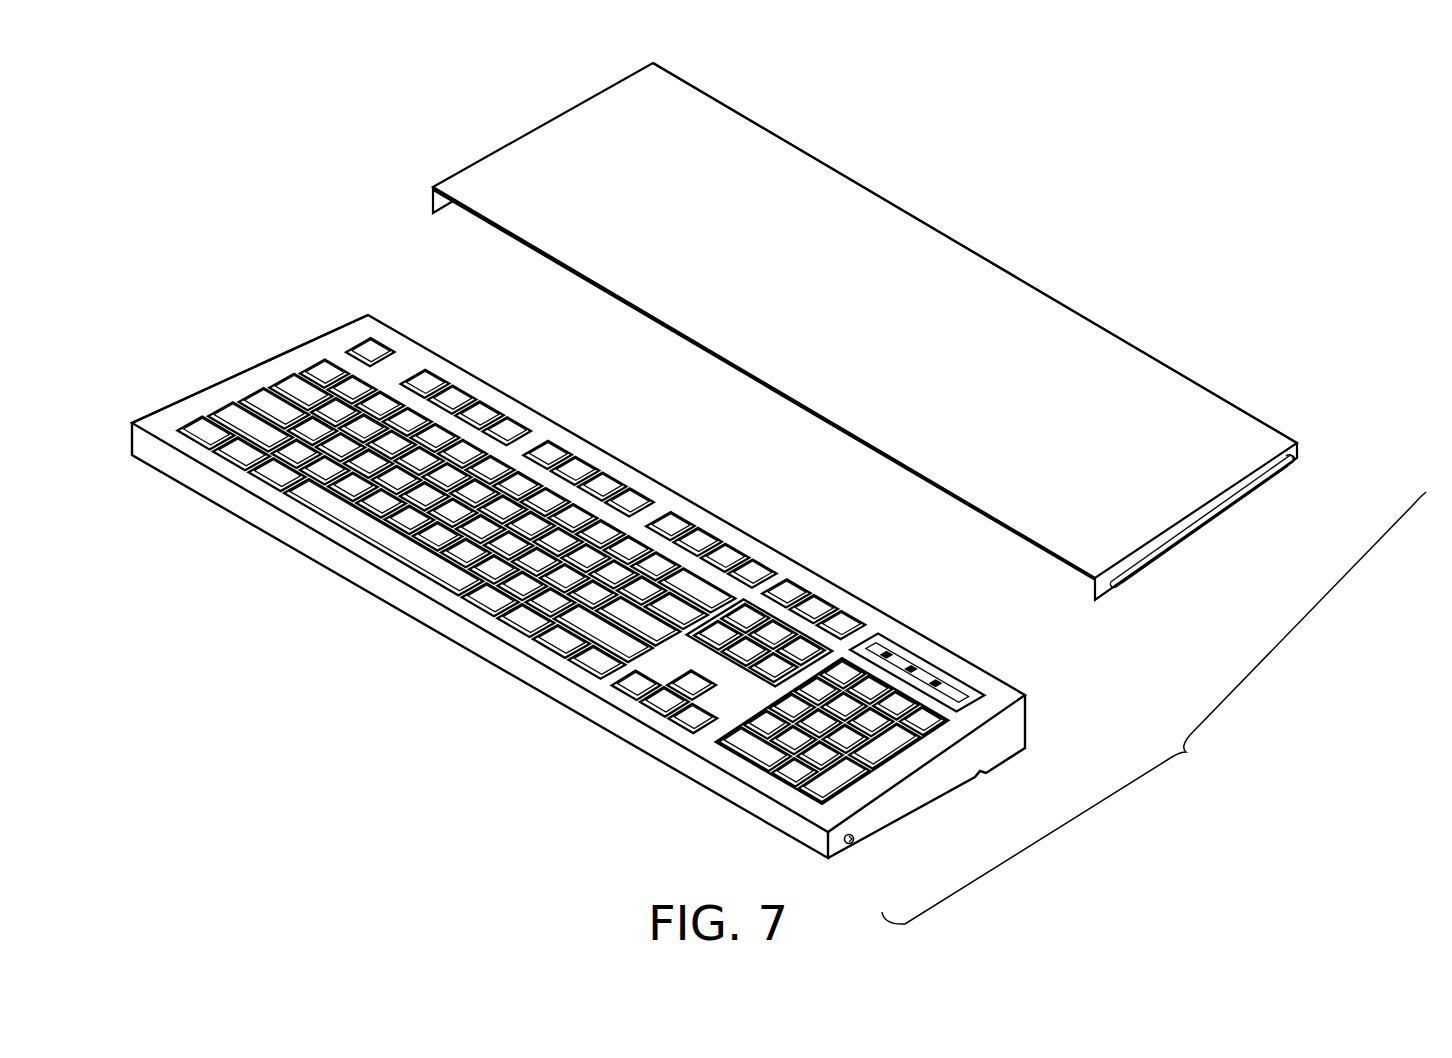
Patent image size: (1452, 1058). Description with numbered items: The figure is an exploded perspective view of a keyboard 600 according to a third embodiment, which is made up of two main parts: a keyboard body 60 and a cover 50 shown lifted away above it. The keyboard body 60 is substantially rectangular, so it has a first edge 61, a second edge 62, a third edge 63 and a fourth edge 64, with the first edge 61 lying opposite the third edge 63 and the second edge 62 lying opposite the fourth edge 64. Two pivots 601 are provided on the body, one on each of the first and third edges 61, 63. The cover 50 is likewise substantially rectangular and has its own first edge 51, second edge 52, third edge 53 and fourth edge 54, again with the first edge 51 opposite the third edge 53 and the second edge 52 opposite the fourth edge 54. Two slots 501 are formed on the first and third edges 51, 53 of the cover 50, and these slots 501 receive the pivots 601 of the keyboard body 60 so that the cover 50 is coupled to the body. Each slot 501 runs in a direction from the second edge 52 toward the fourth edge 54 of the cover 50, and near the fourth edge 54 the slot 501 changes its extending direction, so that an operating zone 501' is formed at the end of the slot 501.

The cover 50 is at (1003, 261).
The first edge 51 is at (1222, 498).
The second edge 52 is at (806, 410).
The third edge 53 is at (432, 207).
The fourth edge 54 is at (1108, 334).
The slot 501 is at (1202, 528).
The operating zone 501' is at (1345, 478).
The keyboard body 60 is at (887, 612).
The first edge 61 is at (921, 790).
The second edge 62 is at (496, 651).
The third edge 63 is at (280, 355).
The fourth edge 64 is at (668, 486).
The keyboard 600 is at (1154, 708).
The pivot 601 is at (863, 840).